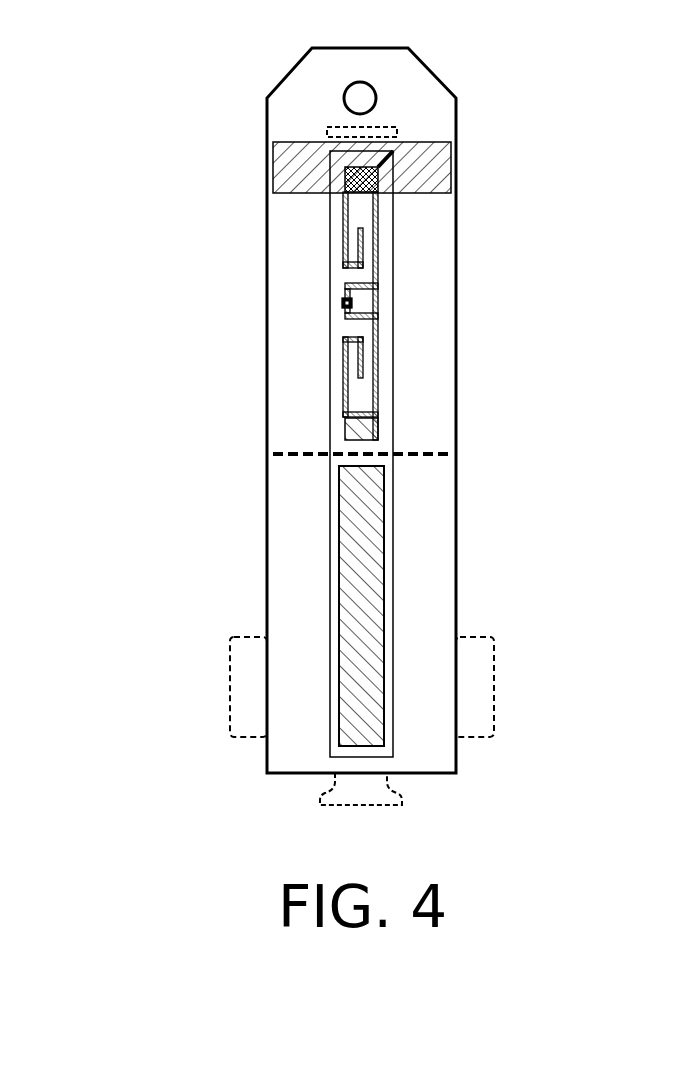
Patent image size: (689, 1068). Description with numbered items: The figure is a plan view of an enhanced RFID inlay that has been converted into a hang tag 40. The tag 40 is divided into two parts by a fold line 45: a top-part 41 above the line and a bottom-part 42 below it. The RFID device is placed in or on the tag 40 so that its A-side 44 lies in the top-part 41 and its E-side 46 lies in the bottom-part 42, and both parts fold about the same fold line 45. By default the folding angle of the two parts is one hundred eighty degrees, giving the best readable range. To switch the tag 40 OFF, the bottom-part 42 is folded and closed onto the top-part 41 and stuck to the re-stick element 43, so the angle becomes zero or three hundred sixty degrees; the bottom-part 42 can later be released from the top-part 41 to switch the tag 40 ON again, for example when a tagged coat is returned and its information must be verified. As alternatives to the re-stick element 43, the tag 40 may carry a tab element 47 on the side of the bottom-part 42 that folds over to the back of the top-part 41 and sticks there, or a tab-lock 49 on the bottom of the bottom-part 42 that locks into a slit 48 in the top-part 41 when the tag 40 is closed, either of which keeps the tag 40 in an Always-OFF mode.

The hang tag 40 is at (108, 65).
The top-part 41 is at (295, 323).
The bottom-part 42 is at (297, 600).
The re-stick element 43 is at (280, 170).
The A-side 44 is at (387, 342).
The fold line 45 is at (438, 452).
The E-side 46 is at (387, 610).
The tab element 47 is at (250, 679).
The slit 48 is at (397, 130).
The tab-lock 49 is at (383, 796).